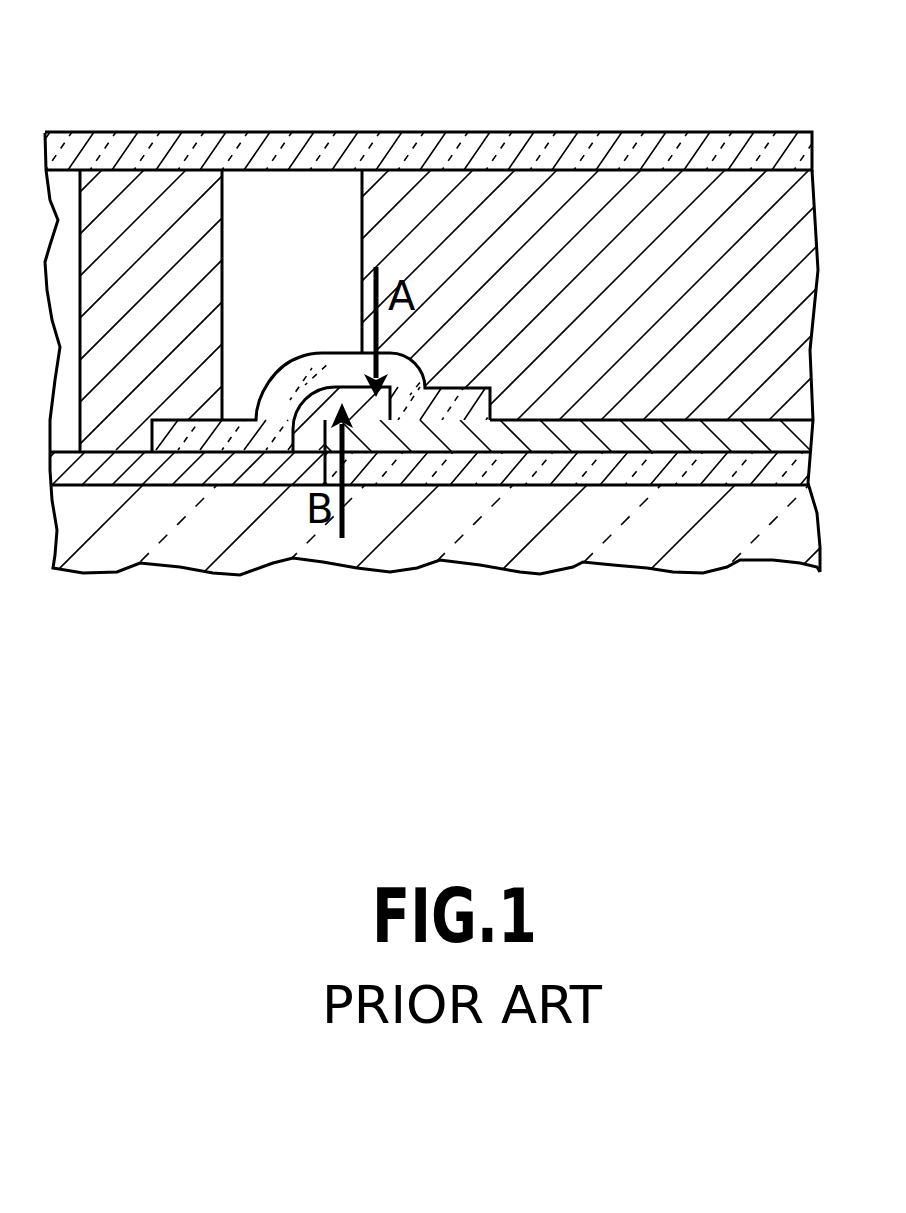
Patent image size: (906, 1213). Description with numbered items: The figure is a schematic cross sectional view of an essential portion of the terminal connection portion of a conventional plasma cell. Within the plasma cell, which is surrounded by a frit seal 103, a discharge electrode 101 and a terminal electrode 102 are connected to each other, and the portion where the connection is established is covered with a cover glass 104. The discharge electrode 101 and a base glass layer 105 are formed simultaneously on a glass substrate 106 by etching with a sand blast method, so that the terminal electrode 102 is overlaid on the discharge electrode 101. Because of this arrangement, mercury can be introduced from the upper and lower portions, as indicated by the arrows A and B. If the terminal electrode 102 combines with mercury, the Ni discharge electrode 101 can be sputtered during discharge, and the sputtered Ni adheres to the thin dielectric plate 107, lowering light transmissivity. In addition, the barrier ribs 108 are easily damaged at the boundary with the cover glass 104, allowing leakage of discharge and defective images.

The discharge electrode 101 is at (492, 440).
The terminal electrode 102 is at (130, 468).
The frit seal 103 is at (165, 160).
The cover glass 104 is at (432, 405).
The base glass layer 105 is at (622, 470).
The glass substrate 106 is at (742, 517).
The thin dielectric plate 107 is at (393, 157).
The barrier rib 108 is at (638, 197).